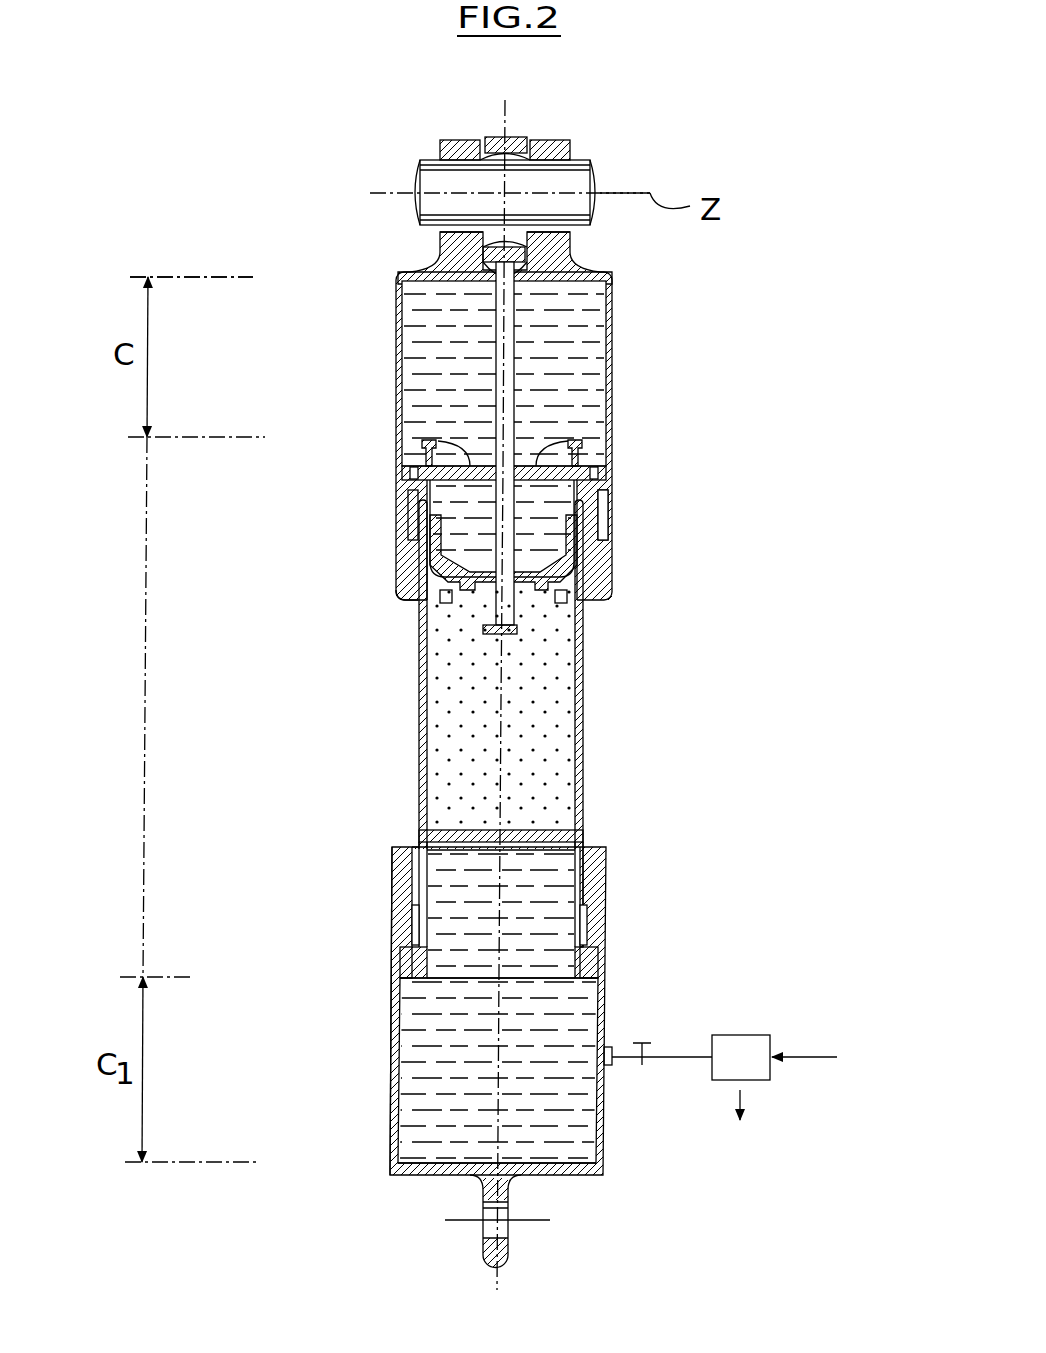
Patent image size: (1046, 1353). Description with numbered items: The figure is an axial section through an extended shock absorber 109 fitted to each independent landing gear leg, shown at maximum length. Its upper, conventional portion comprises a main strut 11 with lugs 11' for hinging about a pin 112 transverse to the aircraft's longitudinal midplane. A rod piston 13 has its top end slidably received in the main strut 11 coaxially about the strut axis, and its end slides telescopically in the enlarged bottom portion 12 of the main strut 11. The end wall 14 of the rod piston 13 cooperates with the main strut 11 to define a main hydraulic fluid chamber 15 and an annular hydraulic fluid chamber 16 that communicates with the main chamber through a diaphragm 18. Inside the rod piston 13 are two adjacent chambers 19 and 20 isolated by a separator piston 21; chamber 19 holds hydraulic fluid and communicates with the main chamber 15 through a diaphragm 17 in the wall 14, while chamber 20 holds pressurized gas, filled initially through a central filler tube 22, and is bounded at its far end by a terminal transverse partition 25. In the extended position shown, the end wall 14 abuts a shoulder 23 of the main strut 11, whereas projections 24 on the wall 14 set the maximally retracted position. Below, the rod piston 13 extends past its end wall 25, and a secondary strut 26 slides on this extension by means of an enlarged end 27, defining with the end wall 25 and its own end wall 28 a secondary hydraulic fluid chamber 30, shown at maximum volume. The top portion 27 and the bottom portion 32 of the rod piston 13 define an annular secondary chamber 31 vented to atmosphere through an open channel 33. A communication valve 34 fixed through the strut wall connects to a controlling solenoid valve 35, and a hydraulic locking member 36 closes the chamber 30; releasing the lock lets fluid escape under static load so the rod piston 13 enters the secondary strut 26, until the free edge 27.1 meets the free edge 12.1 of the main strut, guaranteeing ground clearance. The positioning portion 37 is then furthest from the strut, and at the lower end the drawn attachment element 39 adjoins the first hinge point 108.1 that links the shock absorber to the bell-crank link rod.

The lugs 11' is at (520, 182).
The pin 112 is at (633, 193).
The extended shock absorber 109 is at (283, 300).
The main strut 11 is at (472, 414).
The main hydraulic fluid chamber 15 is at (585, 335).
The central filler tube 22 is at (493, 360).
The end wall 14 is at (553, 462).
The diaphragm 17 is at (470, 467).
The diaphragm 18 is at (597, 478).
The projections 24 is at (423, 467).
The shoulder 23 is at (602, 506).
The chamber 19 is at (453, 510).
The annular hydraulic fluid chamber 16 is at (590, 520).
The enlarged bottom portion 12 is at (405, 565).
The separator piston 21 is at (572, 607).
The free edge 12.1 is at (408, 600).
The rod piston 13 is at (418, 715).
The chamber 20 is at (540, 705).
The terminal transverse partition 25 is at (432, 832).
The secondary strut 26 is at (607, 880).
The free edge 27.1 is at (414, 847).
The enlarged end 27 is at (400, 880).
The annular secondary chamber 31 is at (413, 930).
The open channel 33 is at (600, 942).
The bottom portion 32 is at (400, 988).
The communication valve 34 is at (614, 1050).
The controlling solenoid valve 35 is at (760, 1035).
The secondary hydraulic fluid chamber 30 is at (430, 1052).
The positioning portion 37 is at (390, 1080).
The hydraulic locking member 36 is at (645, 1066).
The end wall 28 is at (440, 1163).
The lower attachment stem 39 is at (487, 1253).
The first hinge point 108.1 is at (550, 1220).